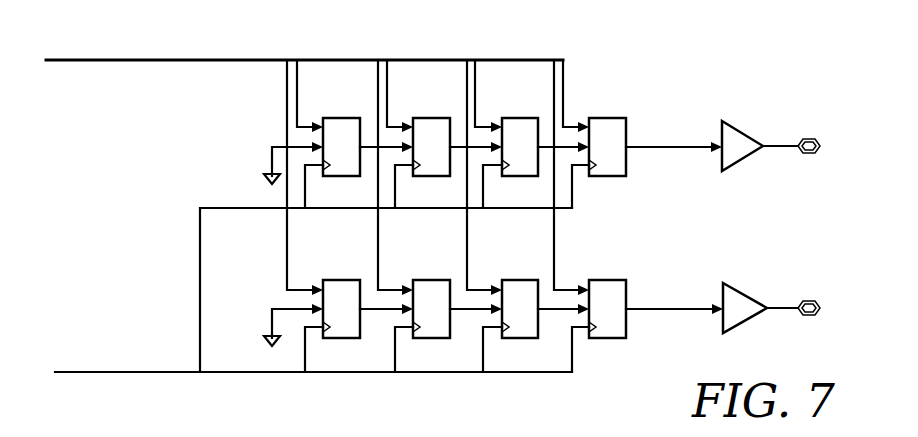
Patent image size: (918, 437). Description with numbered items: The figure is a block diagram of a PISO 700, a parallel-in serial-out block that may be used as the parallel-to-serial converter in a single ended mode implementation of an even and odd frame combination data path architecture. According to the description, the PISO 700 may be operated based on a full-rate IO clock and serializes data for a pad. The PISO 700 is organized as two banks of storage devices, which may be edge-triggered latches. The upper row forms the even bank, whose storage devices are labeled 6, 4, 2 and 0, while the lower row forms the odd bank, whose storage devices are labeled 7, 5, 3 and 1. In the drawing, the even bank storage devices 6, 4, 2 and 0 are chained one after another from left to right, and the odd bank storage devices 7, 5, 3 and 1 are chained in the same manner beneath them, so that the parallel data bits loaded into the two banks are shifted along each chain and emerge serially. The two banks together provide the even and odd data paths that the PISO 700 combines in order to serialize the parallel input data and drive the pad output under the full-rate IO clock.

The PISO 700 is at (433, 193).
The even bank storage device 0 is at (607, 147).
The odd bank storage device 1 is at (607, 309).
The even bank storage device 2 is at (520, 147).
The odd bank storage device 3 is at (520, 309).
The even bank storage device 4 is at (431, 147).
The odd bank storage device 5 is at (431, 309).
The even bank storage device 6 is at (341, 147).
The odd bank storage device 7 is at (341, 309).